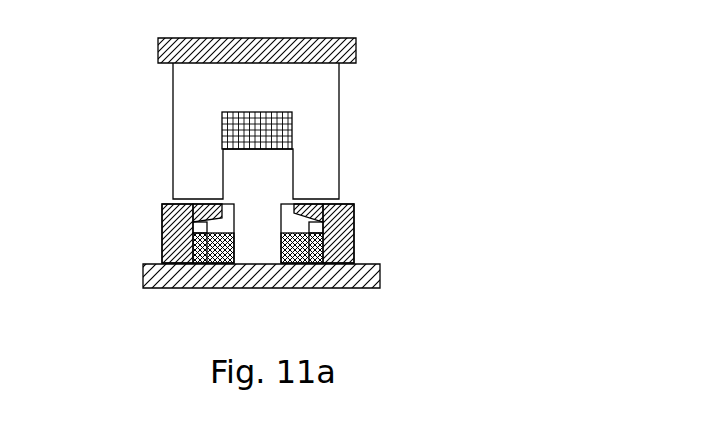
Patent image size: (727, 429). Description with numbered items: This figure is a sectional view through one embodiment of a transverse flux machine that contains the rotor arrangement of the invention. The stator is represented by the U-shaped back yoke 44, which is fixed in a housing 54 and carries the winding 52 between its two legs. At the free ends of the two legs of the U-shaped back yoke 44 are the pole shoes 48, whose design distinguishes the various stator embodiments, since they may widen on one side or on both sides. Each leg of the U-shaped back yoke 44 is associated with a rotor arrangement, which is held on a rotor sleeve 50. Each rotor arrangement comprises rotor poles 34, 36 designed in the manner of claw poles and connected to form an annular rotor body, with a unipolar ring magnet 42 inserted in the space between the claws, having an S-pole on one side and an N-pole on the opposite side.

The housing 54 is at (278, 38).
The U-shaped back yoke 44 is at (327, 115).
The winding 52 is at (222, 135).
The pole shoes 48 is at (197, 192).
The unipolar ring magnet 42 is at (172, 232).
The rotor pole 34 is at (415, 193).
The rotor pole 36 is at (341, 207).
The rotor sleeve 50 is at (350, 287).